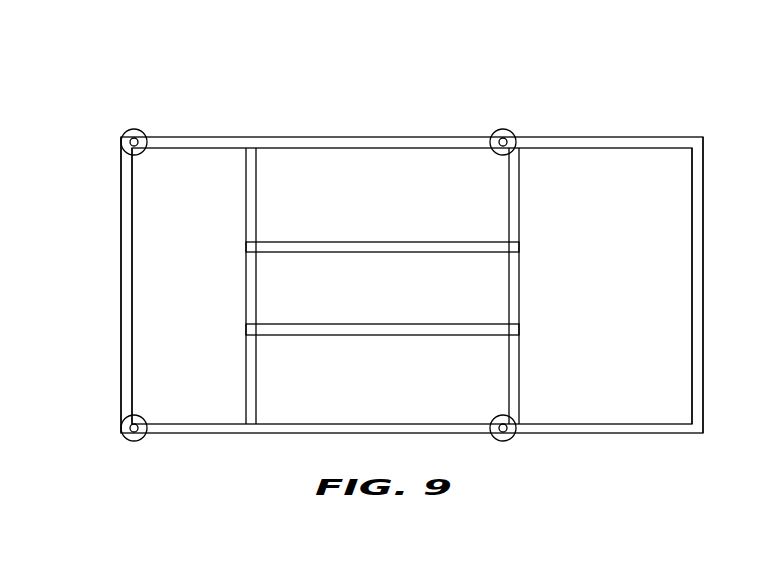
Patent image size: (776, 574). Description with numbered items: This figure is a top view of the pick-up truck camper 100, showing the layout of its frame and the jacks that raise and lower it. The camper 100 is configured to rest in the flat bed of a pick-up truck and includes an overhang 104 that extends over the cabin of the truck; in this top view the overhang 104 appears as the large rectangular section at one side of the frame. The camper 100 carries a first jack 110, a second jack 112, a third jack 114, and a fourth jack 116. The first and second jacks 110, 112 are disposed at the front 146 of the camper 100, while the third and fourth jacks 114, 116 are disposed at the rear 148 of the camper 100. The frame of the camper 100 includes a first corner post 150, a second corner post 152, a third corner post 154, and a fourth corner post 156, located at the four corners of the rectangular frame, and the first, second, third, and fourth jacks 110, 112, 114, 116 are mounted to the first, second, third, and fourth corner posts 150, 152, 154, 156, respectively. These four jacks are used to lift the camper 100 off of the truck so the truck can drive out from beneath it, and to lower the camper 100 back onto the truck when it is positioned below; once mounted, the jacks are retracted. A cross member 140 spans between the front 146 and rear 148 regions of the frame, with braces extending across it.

The pick-up truck camper 100 is at (360, 108).
The overhang 104 is at (700, 220).
The first jack 110 is at (505, 441).
The second jack 112 is at (502, 131).
The third jack 114 is at (135, 442).
The fourth jack 116 is at (128, 132).
The cross brace member 140 is at (235, 143).
The front 146 is at (515, 187).
The rear 148 is at (128, 211).
The first corner post 150 is at (520, 432).
The second corner post 152 is at (514, 140).
The third corner post 154 is at (123, 428).
The fourth corner post 156 is at (124, 142).